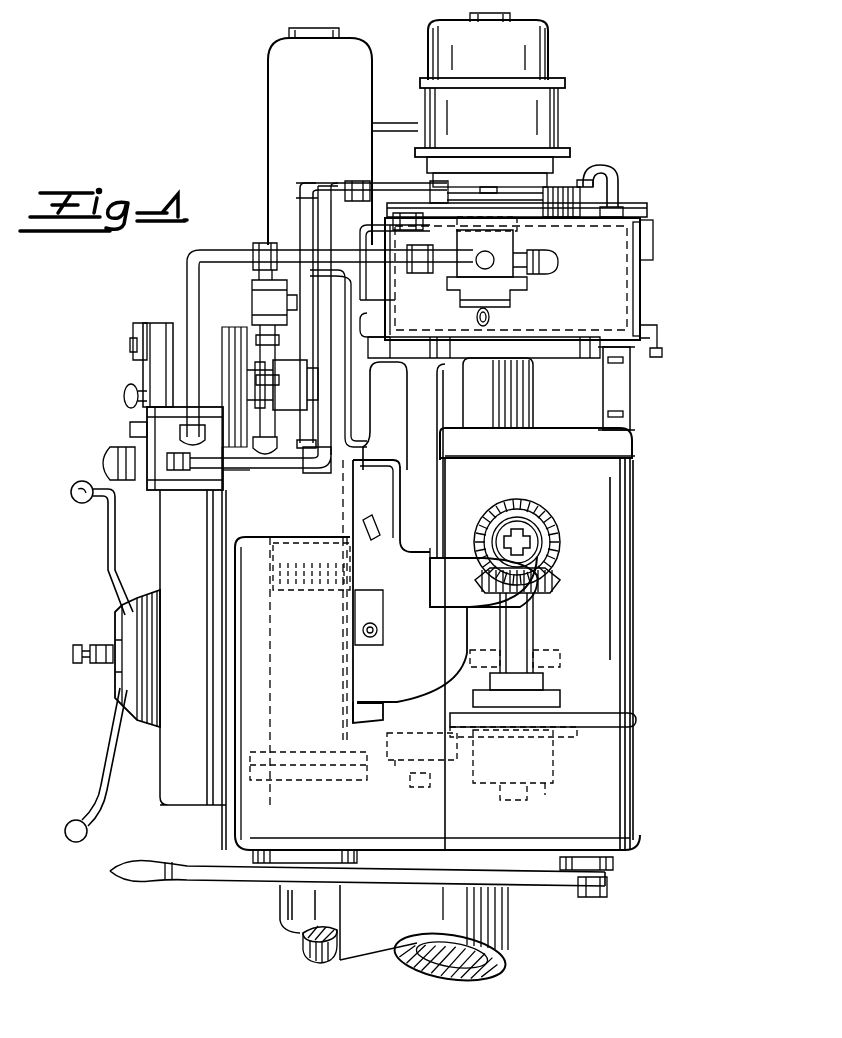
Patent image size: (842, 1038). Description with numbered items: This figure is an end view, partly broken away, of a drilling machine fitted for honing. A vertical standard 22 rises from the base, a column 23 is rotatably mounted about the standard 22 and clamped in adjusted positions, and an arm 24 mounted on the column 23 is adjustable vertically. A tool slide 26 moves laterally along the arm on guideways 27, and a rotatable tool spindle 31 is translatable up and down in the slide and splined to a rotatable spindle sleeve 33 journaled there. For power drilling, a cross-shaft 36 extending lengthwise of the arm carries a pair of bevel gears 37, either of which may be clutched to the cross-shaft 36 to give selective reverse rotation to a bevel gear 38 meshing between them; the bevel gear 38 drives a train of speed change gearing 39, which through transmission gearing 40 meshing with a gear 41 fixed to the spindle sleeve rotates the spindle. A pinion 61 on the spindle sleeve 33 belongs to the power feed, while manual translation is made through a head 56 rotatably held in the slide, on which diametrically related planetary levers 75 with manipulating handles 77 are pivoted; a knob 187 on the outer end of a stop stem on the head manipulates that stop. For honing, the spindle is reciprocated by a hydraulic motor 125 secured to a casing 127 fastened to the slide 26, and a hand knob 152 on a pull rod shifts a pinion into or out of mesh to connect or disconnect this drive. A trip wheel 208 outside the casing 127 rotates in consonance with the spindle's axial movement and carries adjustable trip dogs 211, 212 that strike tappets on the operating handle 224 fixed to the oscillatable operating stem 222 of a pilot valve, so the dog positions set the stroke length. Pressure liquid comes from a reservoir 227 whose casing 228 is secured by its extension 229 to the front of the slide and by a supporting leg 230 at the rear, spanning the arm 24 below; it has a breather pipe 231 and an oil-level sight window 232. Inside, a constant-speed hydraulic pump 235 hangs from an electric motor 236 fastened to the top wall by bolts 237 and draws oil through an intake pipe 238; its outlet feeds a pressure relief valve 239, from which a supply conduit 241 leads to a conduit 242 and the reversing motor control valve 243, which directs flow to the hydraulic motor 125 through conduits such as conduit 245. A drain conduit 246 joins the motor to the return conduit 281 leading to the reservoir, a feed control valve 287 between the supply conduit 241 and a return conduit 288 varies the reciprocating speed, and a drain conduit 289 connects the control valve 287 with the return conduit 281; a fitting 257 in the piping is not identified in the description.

The standard 22 is at (505, 968).
The column 23 is at (505, 930).
The arm 24 is at (421, 543).
The tool slide 26 is at (258, 191).
The guideways 27 is at (380, 692).
The tool spindle 31 is at (325, 908).
The spindle sleeve 33 is at (272, 717).
The cross-shaft 36 is at (543, 515).
The pair of bevel gears 37 is at (560, 547).
The bevel gear 38 is at (550, 582).
The train of speed change gearing 39 is at (562, 676).
The transmission gearing 40 is at (455, 776).
The gear 41 is at (360, 771).
The head 56 is at (146, 736).
The pinion 61 is at (313, 594).
The planetary levers 75 is at (113, 528).
The manipulating handles 77 is at (78, 505).
The hydraulic motor 125 is at (338, 396).
The casing 127 is at (206, 488).
The hand knob 152 is at (124, 398).
The knob 187 is at (79, 664).
The trip wheel 208 is at (157, 323).
The trip dog 211 is at (140, 322).
The trip dog 212 is at (133, 340).
The operating stem 222 is at (131, 430).
The operating handle 224 is at (135, 485).
The reservoir 227 is at (656, 217).
The casing 228 is at (643, 283).
The extension 229 is at (365, 305).
The supporting leg 230 is at (618, 397).
The breather pipe 231 is at (620, 178).
The oil-level sight window 232 is at (655, 243).
The hydraulic pump 235 is at (518, 302).
The electric motor 236 is at (571, 58).
The bolts 237 is at (560, 190).
The intake pipe 238 is at (492, 315).
The pressure relief valve 239 is at (512, 262).
The fluid pressure supply conduit 241 is at (402, 268).
The conduit 242 is at (256, 268).
The reversing motor control valve 243 is at (262, 290).
The conduit 245 is at (265, 470).
The drain conduit 246 is at (352, 367).
The elbow 257 is at (320, 185).
The return conduit 281 is at (362, 337).
The control valve 287 is at (110, 455).
The return conduit 288 is at (304, 466).
The drain conduit 289 is at (237, 472).